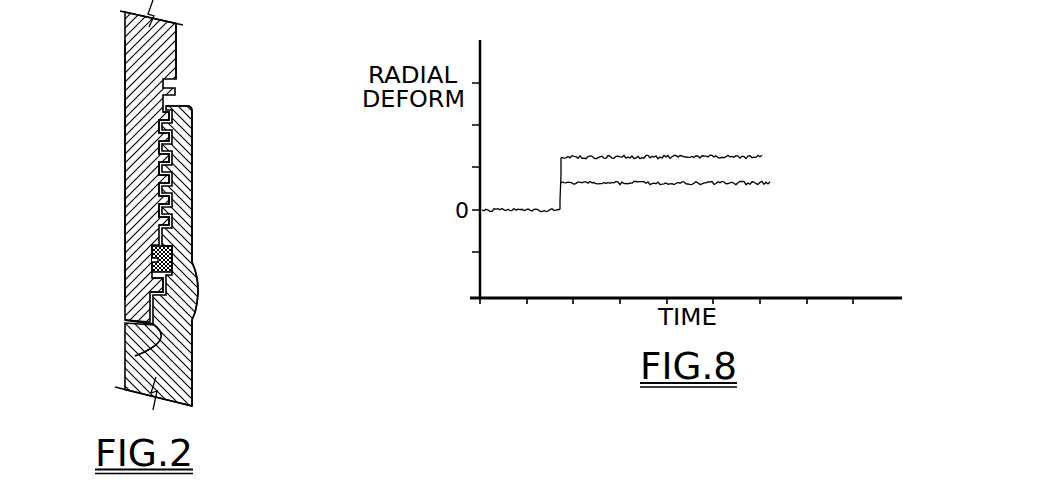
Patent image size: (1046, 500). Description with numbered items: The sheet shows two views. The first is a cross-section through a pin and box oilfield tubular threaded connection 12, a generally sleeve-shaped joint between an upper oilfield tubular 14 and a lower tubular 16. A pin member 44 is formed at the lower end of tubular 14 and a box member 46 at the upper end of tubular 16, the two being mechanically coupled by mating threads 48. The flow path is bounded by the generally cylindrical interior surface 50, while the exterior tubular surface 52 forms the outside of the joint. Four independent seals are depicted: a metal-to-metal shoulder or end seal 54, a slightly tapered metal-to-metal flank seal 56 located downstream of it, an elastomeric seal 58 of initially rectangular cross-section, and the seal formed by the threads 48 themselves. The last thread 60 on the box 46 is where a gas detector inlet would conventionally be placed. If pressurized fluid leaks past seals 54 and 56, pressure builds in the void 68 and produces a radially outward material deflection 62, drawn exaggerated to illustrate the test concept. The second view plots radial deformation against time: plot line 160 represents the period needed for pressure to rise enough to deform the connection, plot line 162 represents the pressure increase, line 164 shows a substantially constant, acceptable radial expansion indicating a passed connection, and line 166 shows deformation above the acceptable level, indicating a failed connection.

In FIG. 2, the pin and box oilfield tubular threaded connection 12 is at (226, 164).
In FIG. 2, the oilfield tubular 14 is at (158, 44).
In FIG. 2, the tubular 16 is at (195, 390).
In FIG. 2, the pin member 44 is at (140, 169).
In FIG. 2, the box member 46 is at (182, 212).
In FIG. 2, the threads 48 is at (163, 206).
In FIG. 2, the interior surface 50 is at (125, 112).
In FIG. 2, the exterior tubular surface 52 is at (193, 362).
In FIG. 2, the shoulder or end seal 54 is at (133, 325).
In FIG. 2, the flank seal 56 is at (133, 353).
In FIG. 2, the elastomeric seal 58 is at (170, 258).
In FIG. 2, the last thread 60 is at (183, 106).
In FIG. 2, the radially outward material deflection 62 is at (198, 298).
In FIG. 2, the void 68 is at (152, 286).
In FIG. 8, the plot line 160 is at (509, 208).
In FIG. 8, the plot line 162 is at (562, 206).
In FIG. 8, the line 164 is at (690, 185).
In FIG. 8, the line 166 is at (684, 158).